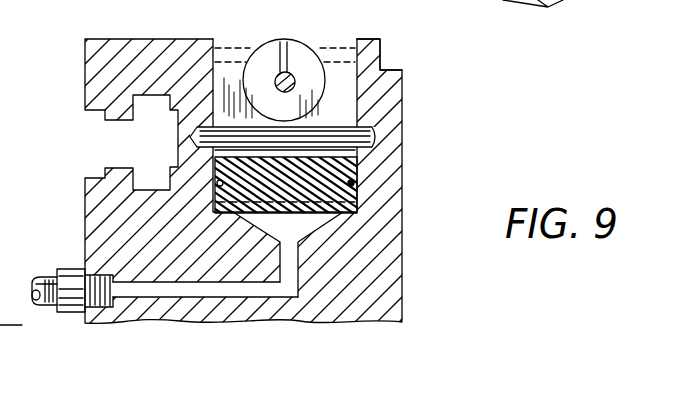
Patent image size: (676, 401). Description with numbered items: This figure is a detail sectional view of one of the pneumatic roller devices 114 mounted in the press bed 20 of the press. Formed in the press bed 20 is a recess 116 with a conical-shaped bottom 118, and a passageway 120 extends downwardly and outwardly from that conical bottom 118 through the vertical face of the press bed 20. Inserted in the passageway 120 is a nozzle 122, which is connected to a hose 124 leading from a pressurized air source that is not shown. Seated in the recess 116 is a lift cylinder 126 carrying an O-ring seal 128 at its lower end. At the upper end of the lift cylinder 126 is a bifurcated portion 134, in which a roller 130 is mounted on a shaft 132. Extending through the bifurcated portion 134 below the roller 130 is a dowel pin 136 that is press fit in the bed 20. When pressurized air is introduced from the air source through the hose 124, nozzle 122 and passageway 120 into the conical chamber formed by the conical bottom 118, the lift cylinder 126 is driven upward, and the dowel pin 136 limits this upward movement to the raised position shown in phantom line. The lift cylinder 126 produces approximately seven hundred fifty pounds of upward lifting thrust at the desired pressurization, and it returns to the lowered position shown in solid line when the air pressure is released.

The press bed 20 is at (99, 233).
The pneumatic roller device 114 is at (358, 108).
The recess 116 is at (224, 72).
The conical-shaped bottom 118 is at (309, 232).
The passageway 120 is at (296, 269).
The nozzle 122 is at (73, 304).
The hose 124 is at (48, 282).
The lift cylinder 126 is at (357, 163).
The O-ring seal 128 is at (349, 185).
The roller 130 is at (292, 52).
The shaft 132 is at (295, 83).
The bifurcated portion 134 is at (335, 96).
The dowel pin 136 is at (377, 136).